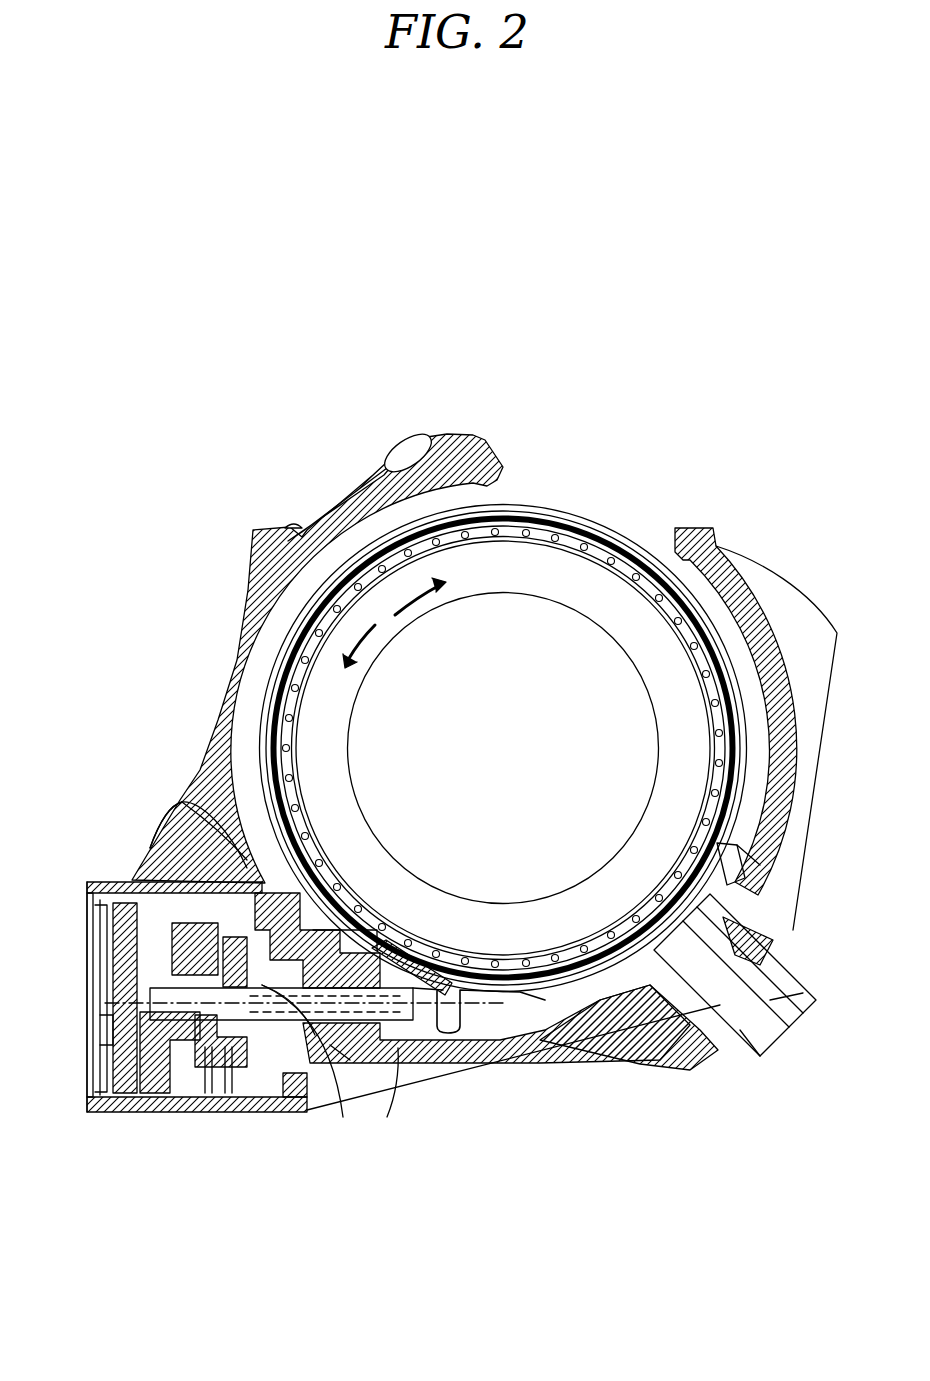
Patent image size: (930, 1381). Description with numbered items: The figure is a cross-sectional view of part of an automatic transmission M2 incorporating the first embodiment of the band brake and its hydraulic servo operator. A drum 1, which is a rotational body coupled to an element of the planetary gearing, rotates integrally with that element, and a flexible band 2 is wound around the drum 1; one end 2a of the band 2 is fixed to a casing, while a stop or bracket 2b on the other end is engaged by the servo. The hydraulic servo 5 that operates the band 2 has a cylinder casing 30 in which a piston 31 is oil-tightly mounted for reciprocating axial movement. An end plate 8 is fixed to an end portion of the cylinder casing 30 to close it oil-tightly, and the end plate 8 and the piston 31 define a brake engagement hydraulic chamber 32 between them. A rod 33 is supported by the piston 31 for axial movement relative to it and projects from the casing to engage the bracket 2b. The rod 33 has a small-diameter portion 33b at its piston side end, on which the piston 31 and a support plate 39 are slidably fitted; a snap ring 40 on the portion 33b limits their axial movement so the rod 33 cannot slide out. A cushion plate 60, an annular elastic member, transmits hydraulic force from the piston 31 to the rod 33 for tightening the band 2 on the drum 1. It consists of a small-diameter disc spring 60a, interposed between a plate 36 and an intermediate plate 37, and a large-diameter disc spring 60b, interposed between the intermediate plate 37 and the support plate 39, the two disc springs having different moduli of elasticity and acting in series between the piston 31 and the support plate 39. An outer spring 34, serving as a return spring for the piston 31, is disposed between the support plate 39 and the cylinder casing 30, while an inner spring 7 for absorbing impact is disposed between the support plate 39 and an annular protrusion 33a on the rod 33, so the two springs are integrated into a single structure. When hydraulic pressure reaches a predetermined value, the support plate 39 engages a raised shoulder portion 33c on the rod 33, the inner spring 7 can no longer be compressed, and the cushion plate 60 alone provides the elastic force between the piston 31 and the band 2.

The drum 1 is at (640, 650).
The band 2 is at (582, 518).
The one end of the band 2a is at (728, 880).
The bracket 2b is at (456, 1040).
The hydraulic servo 5 is at (248, 1217).
The inner spring 7 is at (230, 1095).
The end plate 8 is at (127, 1117).
The cylinder casing 30 is at (135, 882).
The piston 31 is at (205, 1113).
The brake engagement hydraulic chamber 32 is at (185, 1115).
The rod 33 is at (393, 1062).
The annular protrusion 33a is at (305, 1062).
The small-diameter portion 33b is at (113, 1055).
The raised shoulder portion 33c is at (337, 1048).
The outer spring 34 is at (291, 1075).
The plate 36 is at (170, 943).
The intermediate plate 37 is at (155, 930).
The support plate 39 is at (248, 1090).
The snap ring 40 is at (115, 1030).
The cushion plate 60 is at (190, 746).
The small-diameter disc spring 60a is at (150, 840).
The large-diameter disc spring 60b is at (180, 803).
The automatic transmission M2 is at (770, 377).